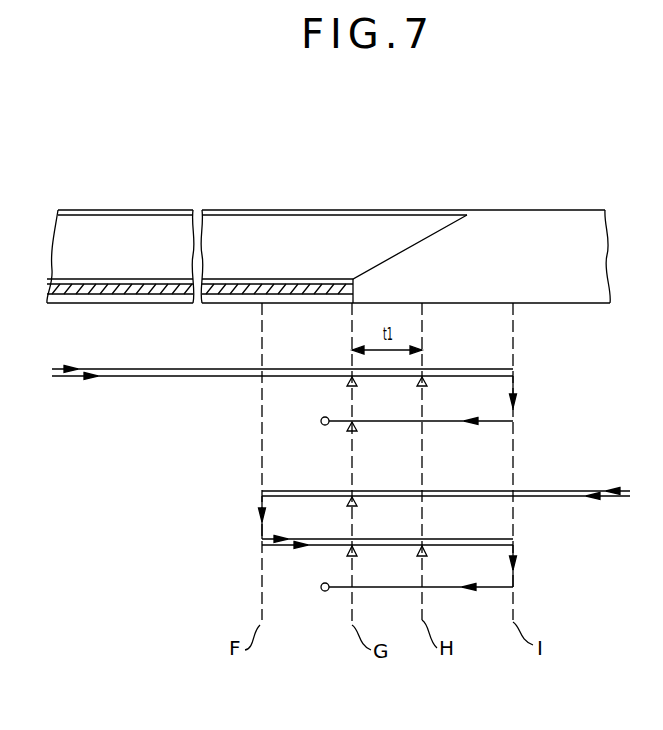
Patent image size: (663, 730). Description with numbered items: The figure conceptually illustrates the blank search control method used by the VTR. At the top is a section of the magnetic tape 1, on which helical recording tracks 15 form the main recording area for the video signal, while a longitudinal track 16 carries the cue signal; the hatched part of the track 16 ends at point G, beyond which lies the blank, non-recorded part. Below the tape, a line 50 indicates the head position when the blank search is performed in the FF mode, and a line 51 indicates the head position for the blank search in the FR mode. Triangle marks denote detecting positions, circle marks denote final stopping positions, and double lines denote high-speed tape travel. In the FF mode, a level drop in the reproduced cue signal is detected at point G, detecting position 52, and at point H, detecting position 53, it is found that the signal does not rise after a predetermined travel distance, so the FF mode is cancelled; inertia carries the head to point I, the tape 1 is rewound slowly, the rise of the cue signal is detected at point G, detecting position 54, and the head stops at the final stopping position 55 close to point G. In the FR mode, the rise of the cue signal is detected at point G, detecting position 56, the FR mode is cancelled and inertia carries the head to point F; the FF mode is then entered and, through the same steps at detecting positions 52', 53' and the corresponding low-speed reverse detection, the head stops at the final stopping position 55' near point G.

The magnetic tape 1 is at (534, 220).
The helical recording tracks 15 is at (305, 228).
The track 16 is at (125, 288).
The line 50 is at (515, 410).
The line 51 is at (515, 580).
The detecting position 52 is at (372, 393).
The detecting position 53 is at (440, 393).
The detecting position 54 is at (372, 441).
The final stopping position 55 is at (306, 407).
The detecting position 56 is at (357, 505).
The detecting position 52' is at (374, 563).
The detecting position 53' is at (376, 568).
The final stopping position 55' is at (306, 578).